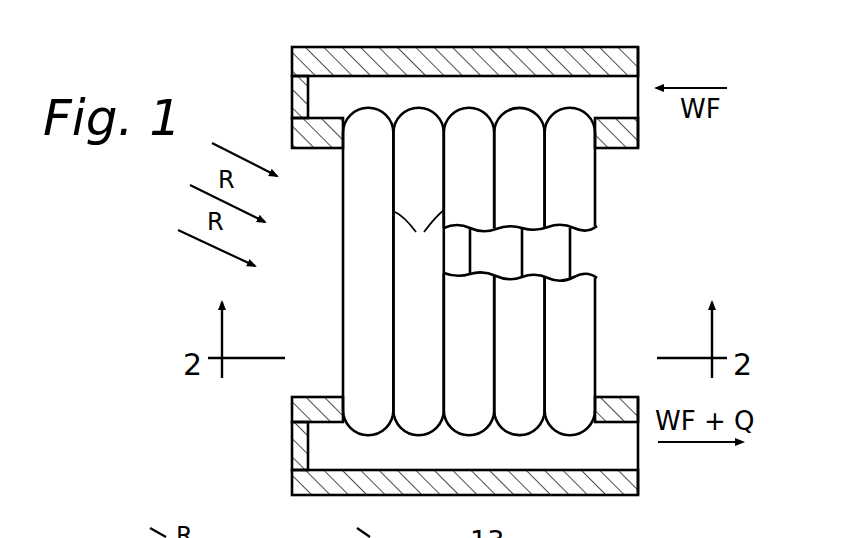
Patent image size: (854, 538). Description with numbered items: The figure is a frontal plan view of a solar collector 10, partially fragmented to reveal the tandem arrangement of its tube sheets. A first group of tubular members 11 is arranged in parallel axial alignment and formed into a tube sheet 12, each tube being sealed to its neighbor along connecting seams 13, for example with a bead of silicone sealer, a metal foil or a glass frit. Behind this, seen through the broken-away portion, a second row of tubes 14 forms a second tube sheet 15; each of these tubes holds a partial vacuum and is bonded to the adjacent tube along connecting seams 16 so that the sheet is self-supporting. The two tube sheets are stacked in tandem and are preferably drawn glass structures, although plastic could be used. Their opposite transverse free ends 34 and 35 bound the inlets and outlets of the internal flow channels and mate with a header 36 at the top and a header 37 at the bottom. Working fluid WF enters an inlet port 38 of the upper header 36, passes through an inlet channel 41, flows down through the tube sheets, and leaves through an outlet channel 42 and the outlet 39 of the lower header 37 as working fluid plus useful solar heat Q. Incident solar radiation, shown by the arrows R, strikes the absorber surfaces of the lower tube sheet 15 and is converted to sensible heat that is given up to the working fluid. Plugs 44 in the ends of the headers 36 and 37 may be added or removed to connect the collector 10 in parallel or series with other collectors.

The solar collector 10 is at (660, 223).
The tubular members 11 is at (376, 184).
The tube sheet 12 is at (595, 190).
The connecting seams 13 is at (419, 239).
The tubes 14 is at (560, 267).
The second tube sheet 15 is at (580, 256).
The connecting seams 16 is at (520, 251).
The transverse free end 34 is at (369, 108).
The transverse free end 35 is at (446, 108).
The header 36 is at (315, 46).
The header 37 is at (313, 397).
The inlet port 38 is at (640, 80).
The outlet 39 is at (642, 459).
The inlet channel 41 is at (595, 85).
The outlet channel 42 is at (598, 455).
The plugs 44 is at (292, 100).